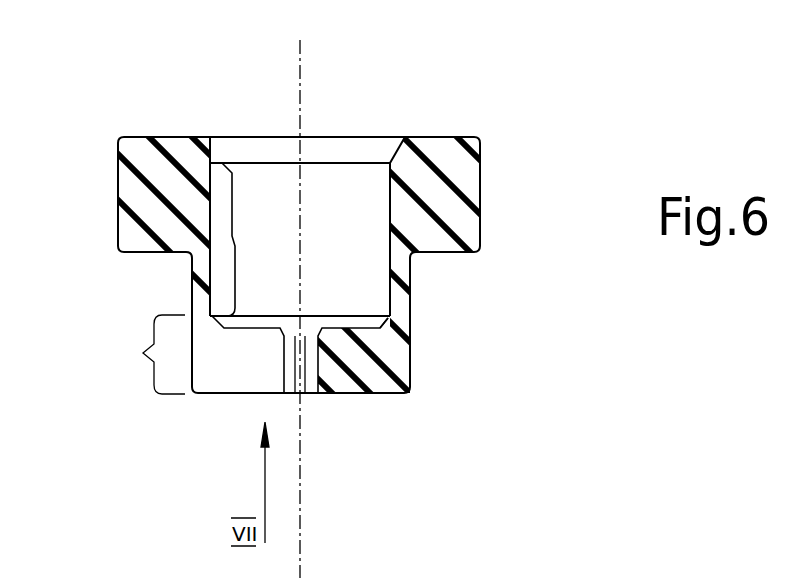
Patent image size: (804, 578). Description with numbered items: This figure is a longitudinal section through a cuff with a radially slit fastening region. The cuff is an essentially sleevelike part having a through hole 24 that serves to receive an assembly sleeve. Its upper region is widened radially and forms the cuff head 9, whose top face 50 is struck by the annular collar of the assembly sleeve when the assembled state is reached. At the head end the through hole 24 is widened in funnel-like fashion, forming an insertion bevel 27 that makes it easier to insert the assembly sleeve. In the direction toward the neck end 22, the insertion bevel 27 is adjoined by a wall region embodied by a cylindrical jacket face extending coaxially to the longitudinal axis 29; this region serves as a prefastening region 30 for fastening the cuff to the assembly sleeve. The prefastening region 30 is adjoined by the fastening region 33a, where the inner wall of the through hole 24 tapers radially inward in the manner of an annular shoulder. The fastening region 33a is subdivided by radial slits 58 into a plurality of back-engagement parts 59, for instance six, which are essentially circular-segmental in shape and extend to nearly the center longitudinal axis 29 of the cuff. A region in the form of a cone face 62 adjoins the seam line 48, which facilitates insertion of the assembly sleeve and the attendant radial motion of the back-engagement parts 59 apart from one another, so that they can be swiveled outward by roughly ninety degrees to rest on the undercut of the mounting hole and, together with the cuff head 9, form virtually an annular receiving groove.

The cuff head 9 is at (490, 167).
The neck end 22 is at (393, 409).
The through hole 24 is at (350, 247).
The insertion bevel 27 is at (218, 147).
The longitudinal axis 29 is at (295, 63).
The prefastening region 30 is at (237, 246).
The fastening region 33a is at (143, 353).
The seam line 48 is at (346, 311).
The top face 50 is at (427, 133).
The radial slits 58 is at (218, 377).
The back-engagement parts 59 is at (392, 361).
The cone face 62 is at (362, 322).